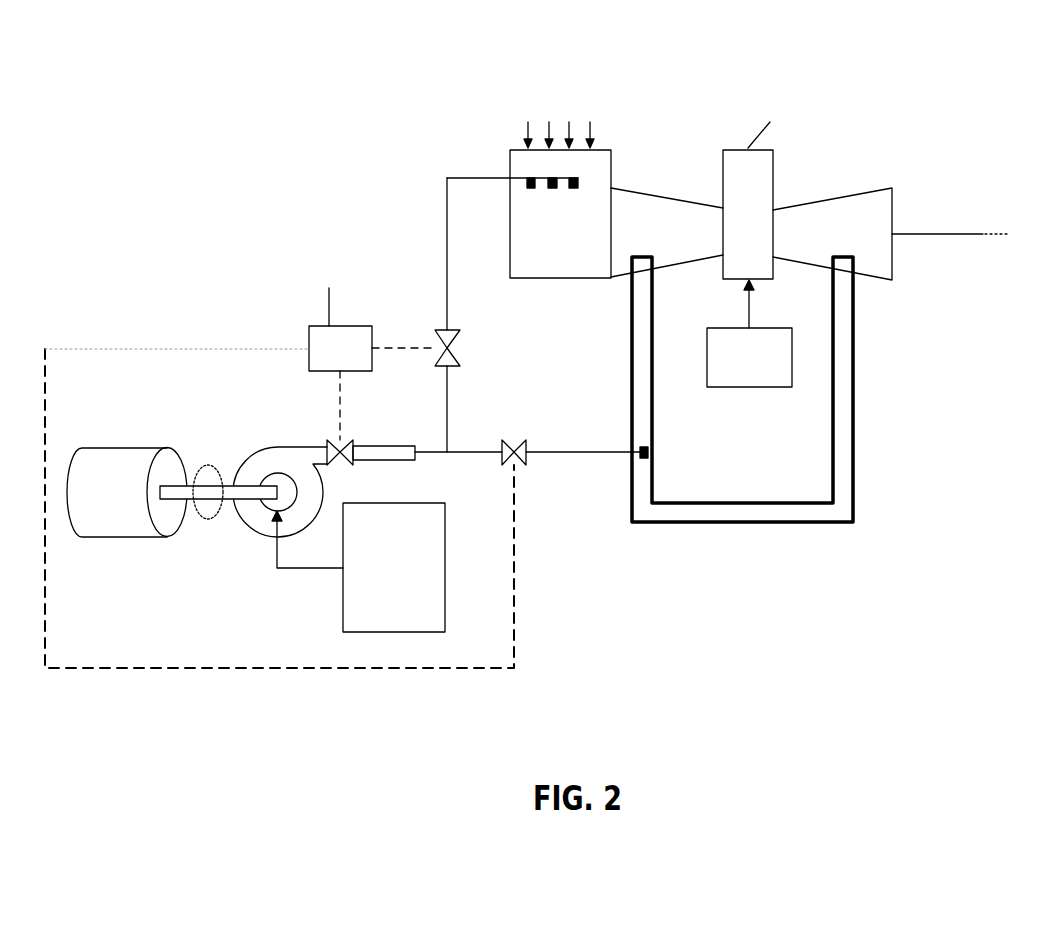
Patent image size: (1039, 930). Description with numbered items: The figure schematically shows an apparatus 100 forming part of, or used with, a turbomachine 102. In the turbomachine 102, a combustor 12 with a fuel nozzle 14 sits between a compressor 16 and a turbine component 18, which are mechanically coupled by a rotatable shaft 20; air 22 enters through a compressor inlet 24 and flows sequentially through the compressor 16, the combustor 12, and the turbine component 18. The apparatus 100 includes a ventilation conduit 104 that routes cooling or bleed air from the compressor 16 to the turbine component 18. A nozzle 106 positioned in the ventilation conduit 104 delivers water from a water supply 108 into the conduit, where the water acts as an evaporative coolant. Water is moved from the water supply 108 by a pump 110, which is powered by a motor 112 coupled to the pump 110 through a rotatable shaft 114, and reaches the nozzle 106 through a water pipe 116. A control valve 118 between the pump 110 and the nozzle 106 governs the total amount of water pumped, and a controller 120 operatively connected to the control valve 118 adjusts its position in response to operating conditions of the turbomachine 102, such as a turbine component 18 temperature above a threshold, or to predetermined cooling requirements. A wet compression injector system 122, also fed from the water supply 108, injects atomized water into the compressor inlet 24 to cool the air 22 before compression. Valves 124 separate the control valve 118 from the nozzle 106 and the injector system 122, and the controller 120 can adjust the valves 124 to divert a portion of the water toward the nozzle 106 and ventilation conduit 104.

The turbomachine 102 is at (693, 91).
The combustor 12 is at (768, 187).
The fuel nozzle 14 is at (705, 353).
The compressor 16 is at (698, 205).
The turbine component 18 is at (877, 190).
The rotatable shaft 20 is at (955, 235).
The air 22 is at (573, 145).
The compressor inlet 24 is at (560, 214).
The apparatus 100 is at (612, 507).
The ventilation conduit 104 is at (737, 523).
The nozzle 106 is at (647, 452).
The water supply 108 is at (358, 567).
The pump 110 is at (277, 445).
The motor 112 is at (127, 445).
The rotatable shaft 114 is at (200, 512).
The water pipe 116 is at (587, 455).
The control valve 118 is at (347, 443).
The controller 120 is at (361, 352).
The wet compression injector system 122 is at (527, 178).
The valves 124 is at (450, 350).